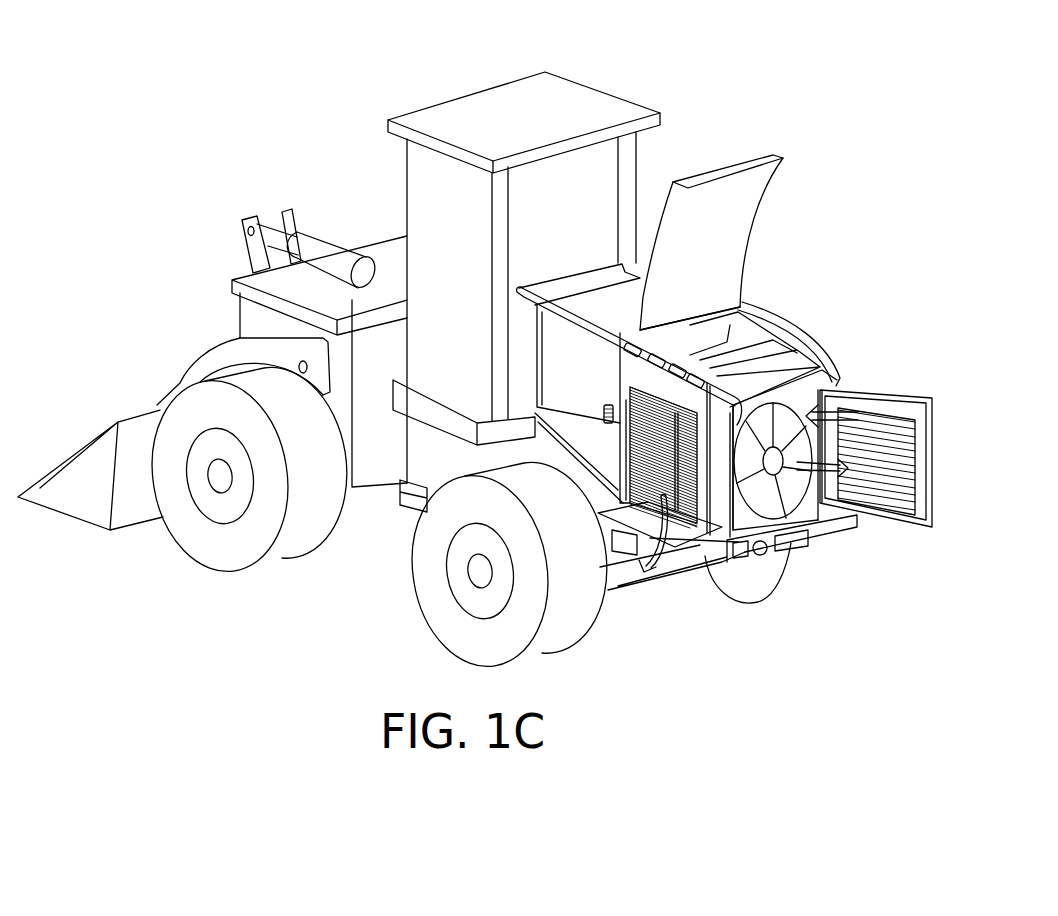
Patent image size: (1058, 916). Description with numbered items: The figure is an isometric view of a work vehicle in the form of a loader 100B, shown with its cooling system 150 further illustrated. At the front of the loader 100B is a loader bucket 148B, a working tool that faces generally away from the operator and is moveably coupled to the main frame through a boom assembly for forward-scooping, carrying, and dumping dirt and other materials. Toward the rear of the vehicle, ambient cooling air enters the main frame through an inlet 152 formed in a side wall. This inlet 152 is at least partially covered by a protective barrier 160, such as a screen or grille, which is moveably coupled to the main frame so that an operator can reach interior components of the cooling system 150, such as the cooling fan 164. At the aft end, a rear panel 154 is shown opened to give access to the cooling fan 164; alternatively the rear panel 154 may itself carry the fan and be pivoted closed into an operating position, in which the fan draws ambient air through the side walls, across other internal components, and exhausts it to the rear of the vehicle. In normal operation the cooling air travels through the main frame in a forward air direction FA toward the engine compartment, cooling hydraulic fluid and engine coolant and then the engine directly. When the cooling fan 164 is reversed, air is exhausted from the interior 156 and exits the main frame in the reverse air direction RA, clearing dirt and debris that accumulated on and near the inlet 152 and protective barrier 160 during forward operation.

The loader 100B is at (134, 61).
The loader bucket 148B is at (98, 450).
The cooling system 150 is at (805, 190).
The inlet 152 is at (683, 418).
The rear panel 154 is at (895, 533).
The interior 156 is at (767, 503).
The protective barrier 160 is at (688, 500).
The cooling fan 164 is at (783, 487).
The reverse air direction RA is at (668, 603).
The forward air direction FA is at (832, 460).